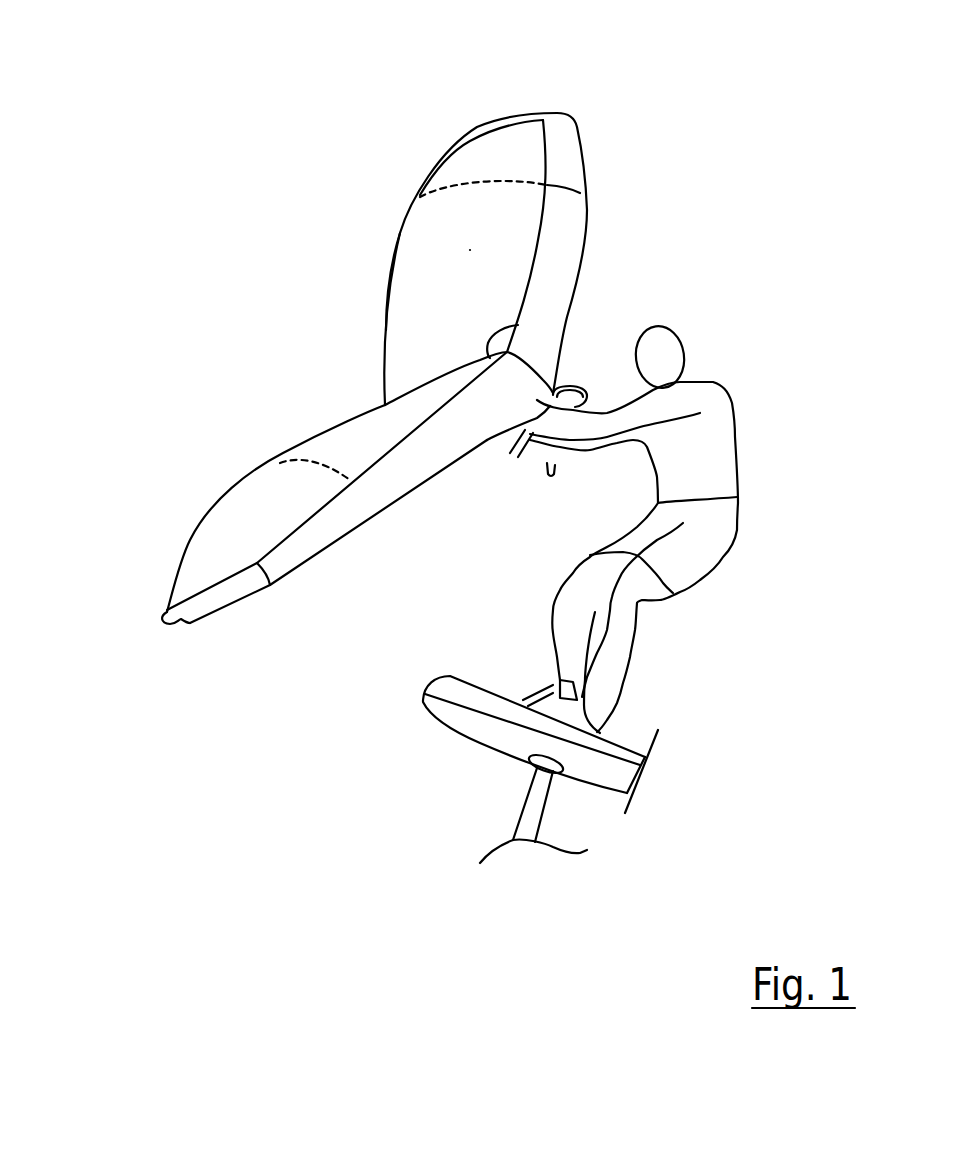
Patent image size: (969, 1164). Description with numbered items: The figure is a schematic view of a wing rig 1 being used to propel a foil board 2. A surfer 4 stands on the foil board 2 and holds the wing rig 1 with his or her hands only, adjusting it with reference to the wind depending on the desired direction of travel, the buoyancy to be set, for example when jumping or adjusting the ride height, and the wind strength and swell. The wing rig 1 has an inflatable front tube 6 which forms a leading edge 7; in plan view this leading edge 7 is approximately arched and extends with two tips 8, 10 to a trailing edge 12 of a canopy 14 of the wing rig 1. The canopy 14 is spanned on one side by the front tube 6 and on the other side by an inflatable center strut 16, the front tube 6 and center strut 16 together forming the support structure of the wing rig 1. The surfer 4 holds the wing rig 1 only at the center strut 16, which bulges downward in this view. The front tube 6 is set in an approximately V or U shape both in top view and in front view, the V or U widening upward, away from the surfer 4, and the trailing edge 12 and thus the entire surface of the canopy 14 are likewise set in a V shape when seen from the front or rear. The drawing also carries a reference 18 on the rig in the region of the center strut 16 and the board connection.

The wing rig 1 is at (384, 350).
The foil board 2 is at (463, 720).
The surfer 4 is at (705, 471).
The inflatable front tube 6 is at (490, 215).
The leading edge 7 is at (308, 521).
The tip 8 is at (183, 618).
The tip 10 is at (506, 121).
The trailing edge 12 is at (400, 237).
The canopy 14 is at (459, 307).
The inflatable center strut 16 is at (518, 325).
The mast foot 18 is at (523, 373).